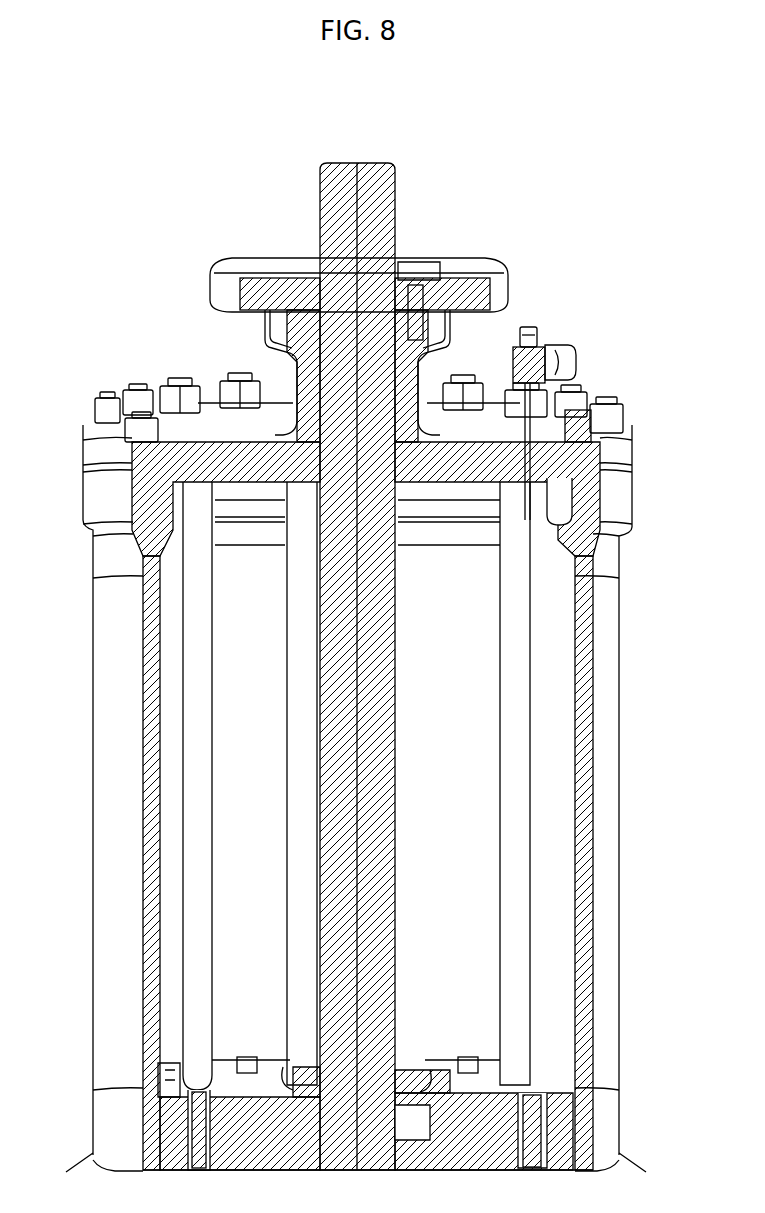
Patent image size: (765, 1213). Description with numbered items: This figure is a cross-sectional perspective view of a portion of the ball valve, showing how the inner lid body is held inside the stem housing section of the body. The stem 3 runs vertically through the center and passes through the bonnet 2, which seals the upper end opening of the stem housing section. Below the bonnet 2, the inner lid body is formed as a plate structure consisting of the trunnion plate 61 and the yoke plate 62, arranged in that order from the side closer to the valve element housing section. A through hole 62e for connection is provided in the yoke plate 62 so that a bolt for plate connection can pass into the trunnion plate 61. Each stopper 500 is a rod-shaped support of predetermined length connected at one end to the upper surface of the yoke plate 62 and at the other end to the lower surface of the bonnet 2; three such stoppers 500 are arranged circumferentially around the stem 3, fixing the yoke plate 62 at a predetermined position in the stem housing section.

The bonnet 2 is at (500, 453).
The stem 3 is at (375, 790).
The stopper 500 is at (300, 789).
The yoke plate 62 is at (500, 1115).
The through hole for connection 62e is at (200, 1112).
The trunnion plate 61 is at (490, 1158).